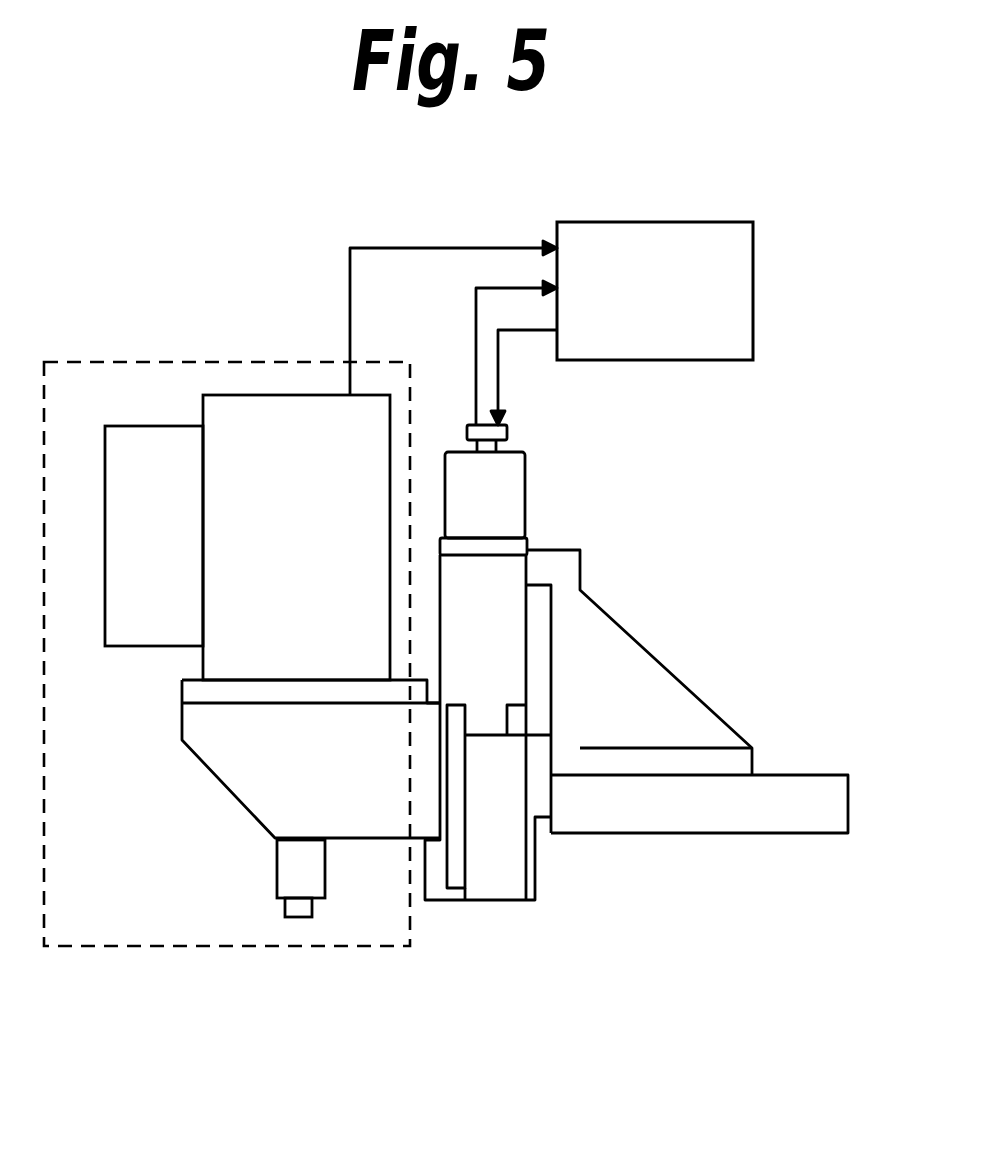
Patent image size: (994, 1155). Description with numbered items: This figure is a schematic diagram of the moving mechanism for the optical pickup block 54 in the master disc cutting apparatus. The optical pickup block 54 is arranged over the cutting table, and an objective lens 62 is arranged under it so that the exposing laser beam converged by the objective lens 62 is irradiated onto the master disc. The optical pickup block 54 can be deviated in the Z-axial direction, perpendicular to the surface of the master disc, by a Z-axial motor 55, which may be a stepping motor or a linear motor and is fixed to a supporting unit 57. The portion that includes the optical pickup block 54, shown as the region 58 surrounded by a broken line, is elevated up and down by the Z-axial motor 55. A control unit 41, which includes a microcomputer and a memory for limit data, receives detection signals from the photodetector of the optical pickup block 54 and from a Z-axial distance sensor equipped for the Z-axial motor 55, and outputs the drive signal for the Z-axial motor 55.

The control unit 41 is at (660, 222).
The optical pickup block 54 is at (293, 428).
The Z-axial motor 55 is at (498, 485).
The supporting unit 57 is at (648, 803).
The spindle unit 58 is at (147, 362).
The objective lens 62 is at (298, 917).